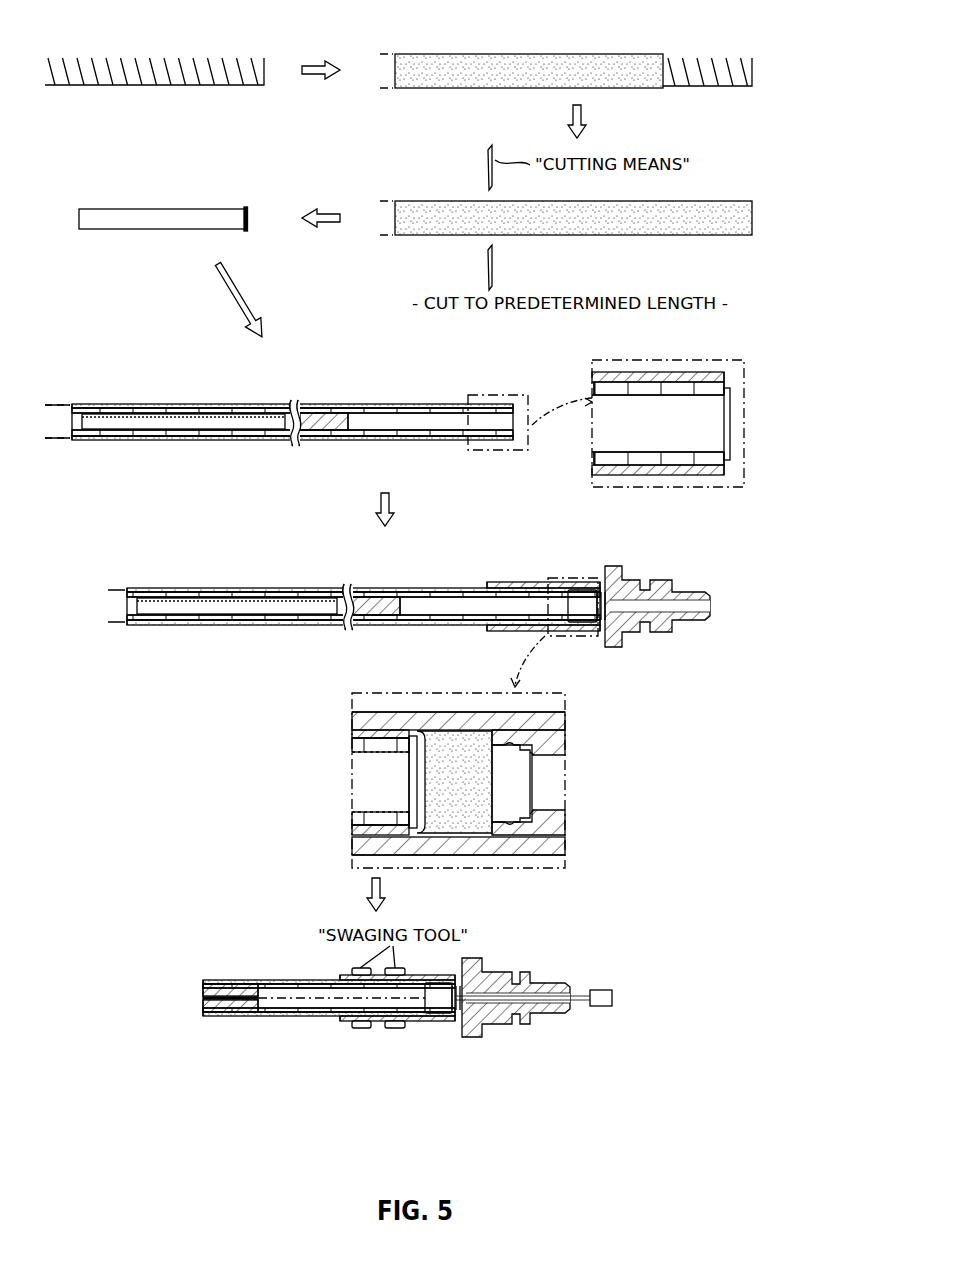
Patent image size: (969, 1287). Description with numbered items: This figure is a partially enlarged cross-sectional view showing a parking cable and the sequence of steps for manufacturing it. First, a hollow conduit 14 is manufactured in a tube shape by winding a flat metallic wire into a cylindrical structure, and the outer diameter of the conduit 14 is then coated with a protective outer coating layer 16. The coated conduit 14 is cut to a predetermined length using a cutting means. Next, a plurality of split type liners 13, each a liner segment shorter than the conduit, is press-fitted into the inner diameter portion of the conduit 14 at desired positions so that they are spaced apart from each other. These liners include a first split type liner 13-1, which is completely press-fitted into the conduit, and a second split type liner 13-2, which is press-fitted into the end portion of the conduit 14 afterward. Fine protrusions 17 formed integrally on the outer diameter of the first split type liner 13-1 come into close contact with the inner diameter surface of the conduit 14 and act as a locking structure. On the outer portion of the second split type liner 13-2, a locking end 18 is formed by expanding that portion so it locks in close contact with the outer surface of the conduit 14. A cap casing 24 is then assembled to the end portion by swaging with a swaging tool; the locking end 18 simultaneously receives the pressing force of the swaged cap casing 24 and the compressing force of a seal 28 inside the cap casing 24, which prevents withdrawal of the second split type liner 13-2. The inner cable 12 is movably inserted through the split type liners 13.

The inner cable 12 is at (235, 997).
The split type liner 13 is at (160, 209).
The first split type liner 13-1 is at (268, 428).
The second split type liner 13-2 is at (117, 215).
The conduit 14 is at (176, 70).
The protective outer coating layer 16 is at (533, 60).
The fine protrusion 17 is at (128, 408).
The locking end 18 is at (246, 207).
The cap casing 24 is at (587, 580).
The seal 28 is at (455, 750).